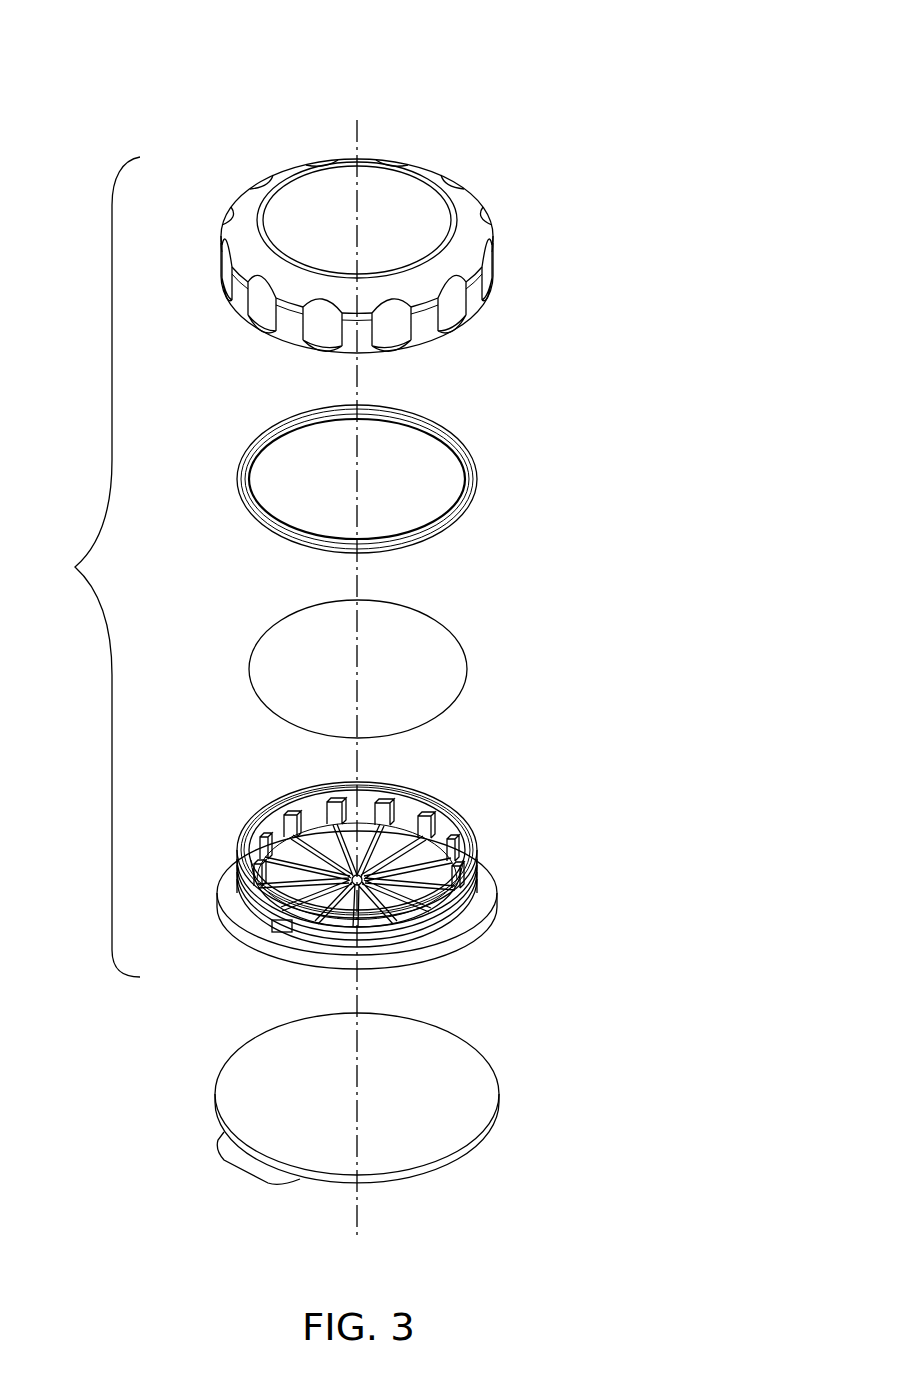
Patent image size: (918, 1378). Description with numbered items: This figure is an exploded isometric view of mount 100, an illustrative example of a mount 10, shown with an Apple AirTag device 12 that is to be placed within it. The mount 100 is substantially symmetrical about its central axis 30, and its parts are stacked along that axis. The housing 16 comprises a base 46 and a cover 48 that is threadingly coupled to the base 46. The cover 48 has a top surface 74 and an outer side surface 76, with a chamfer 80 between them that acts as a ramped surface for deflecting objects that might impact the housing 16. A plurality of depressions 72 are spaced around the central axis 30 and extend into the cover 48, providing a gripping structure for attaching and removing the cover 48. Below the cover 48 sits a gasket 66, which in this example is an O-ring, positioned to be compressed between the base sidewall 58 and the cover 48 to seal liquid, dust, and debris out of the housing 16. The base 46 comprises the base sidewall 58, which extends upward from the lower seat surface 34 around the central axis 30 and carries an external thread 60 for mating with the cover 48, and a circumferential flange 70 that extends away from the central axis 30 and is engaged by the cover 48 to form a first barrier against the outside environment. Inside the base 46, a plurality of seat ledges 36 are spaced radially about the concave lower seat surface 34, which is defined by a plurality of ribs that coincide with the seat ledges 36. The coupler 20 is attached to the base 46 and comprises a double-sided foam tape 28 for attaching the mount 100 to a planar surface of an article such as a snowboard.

The mount 10 is at (746, 62).
The mount 100 is at (624, 114).
The housing 16 is at (93, 567).
The central axis 30 is at (358, 151).
The cover 48 is at (357, 280).
The top surface 74 is at (408, 232).
The chamfer 80 is at (467, 237).
The depressions 72 is at (456, 302).
The outer side surface 76 is at (238, 298).
The gasket 66 is at (466, 443).
The device 12 is at (440, 624).
The base sidewall 58 is at (258, 820).
The circumferential flange 70 is at (229, 887).
The external thread 60 is at (288, 933).
The lower seat surface 34 is at (362, 880).
The seat ledges 36 is at (455, 860).
The base 46 is at (357, 856).
The coupler 20 is at (323, 1112).
The double-sided foam tape 28 is at (253, 1154).